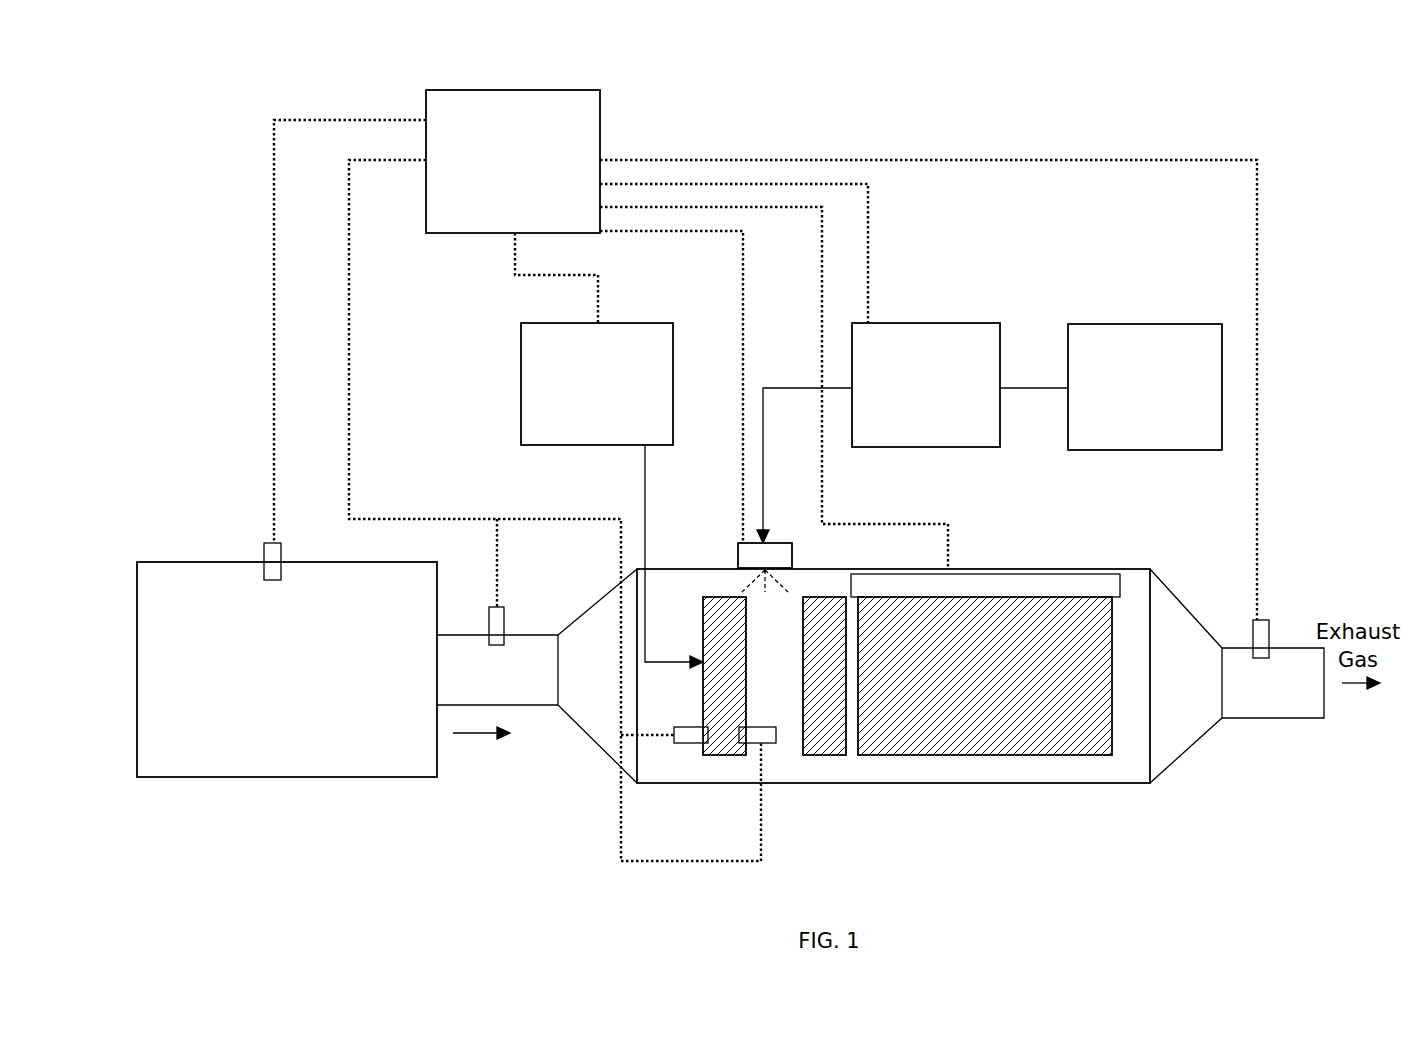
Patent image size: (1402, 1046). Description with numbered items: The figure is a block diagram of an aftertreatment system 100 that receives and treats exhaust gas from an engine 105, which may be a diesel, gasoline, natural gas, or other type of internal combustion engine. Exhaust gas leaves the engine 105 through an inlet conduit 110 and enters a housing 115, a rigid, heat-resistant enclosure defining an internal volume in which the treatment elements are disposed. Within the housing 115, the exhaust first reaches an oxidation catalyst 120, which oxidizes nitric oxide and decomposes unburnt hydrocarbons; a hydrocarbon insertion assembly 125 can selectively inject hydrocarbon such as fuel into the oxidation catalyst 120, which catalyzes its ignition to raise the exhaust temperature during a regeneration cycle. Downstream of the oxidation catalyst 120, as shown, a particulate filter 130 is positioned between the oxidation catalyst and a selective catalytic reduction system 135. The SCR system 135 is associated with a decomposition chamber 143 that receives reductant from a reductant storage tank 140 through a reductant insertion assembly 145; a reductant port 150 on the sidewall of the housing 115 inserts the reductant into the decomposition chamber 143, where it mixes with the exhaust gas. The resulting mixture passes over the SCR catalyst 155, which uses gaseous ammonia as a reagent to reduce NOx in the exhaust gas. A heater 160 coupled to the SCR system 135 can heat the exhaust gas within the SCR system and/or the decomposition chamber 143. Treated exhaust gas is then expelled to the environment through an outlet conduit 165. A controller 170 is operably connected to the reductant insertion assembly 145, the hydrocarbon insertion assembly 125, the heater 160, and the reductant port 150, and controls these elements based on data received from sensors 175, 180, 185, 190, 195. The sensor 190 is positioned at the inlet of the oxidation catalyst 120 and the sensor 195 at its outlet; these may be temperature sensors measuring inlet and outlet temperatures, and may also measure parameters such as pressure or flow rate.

The aftertreatment system 100 is at (1250, 83).
The engine 105 is at (287, 669).
The inlet conduit 110 is at (544, 690).
The housing 115 is at (917, 784).
The oxidation catalyst 120 is at (727, 756).
The hydrocarbon insertion assembly 125 is at (612, 495).
The particulate filter 130 is at (841, 756).
The selective catalytic reduction system 135 is at (975, 765).
The reductant storage tank 140 is at (1111, 387).
The decomposition chamber 143 is at (767, 597).
The reductant insertion assembly 145 is at (878, 433).
The reductant port 150 is at (738, 556).
The SCR catalyst 155 is at (1040, 731).
The heater 160 is at (1090, 584).
The outlet conduit 165 is at (1290, 711).
The controller 170 is at (513, 161).
The sensor 175 is at (501, 616).
The sensor 180 is at (1264, 634).
The sensor 185 is at (276, 557).
The sensor 190 is at (681, 728).
The sensor 195 is at (755, 727).